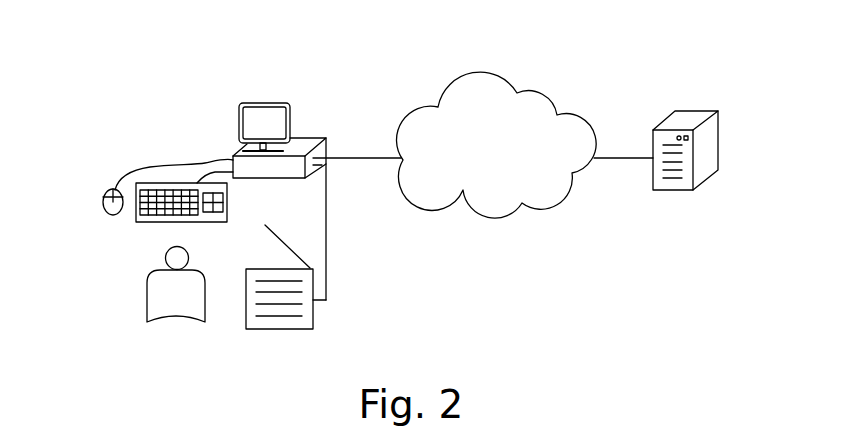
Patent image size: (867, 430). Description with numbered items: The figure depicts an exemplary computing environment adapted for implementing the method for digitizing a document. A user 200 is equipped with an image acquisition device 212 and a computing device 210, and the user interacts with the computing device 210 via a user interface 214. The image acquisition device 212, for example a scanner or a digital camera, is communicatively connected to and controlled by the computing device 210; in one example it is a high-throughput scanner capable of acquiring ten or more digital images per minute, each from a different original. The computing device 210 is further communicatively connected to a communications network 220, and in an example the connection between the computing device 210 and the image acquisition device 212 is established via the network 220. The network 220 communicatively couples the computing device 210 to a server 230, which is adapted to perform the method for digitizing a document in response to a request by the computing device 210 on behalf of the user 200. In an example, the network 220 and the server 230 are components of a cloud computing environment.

The user 200 is at (147, 300).
The computing device 210 is at (308, 137).
The image acquisition device 212 is at (315, 318).
The user interface 214 is at (255, 103).
The communications network 220 is at (474, 164).
The server 230 is at (720, 143).